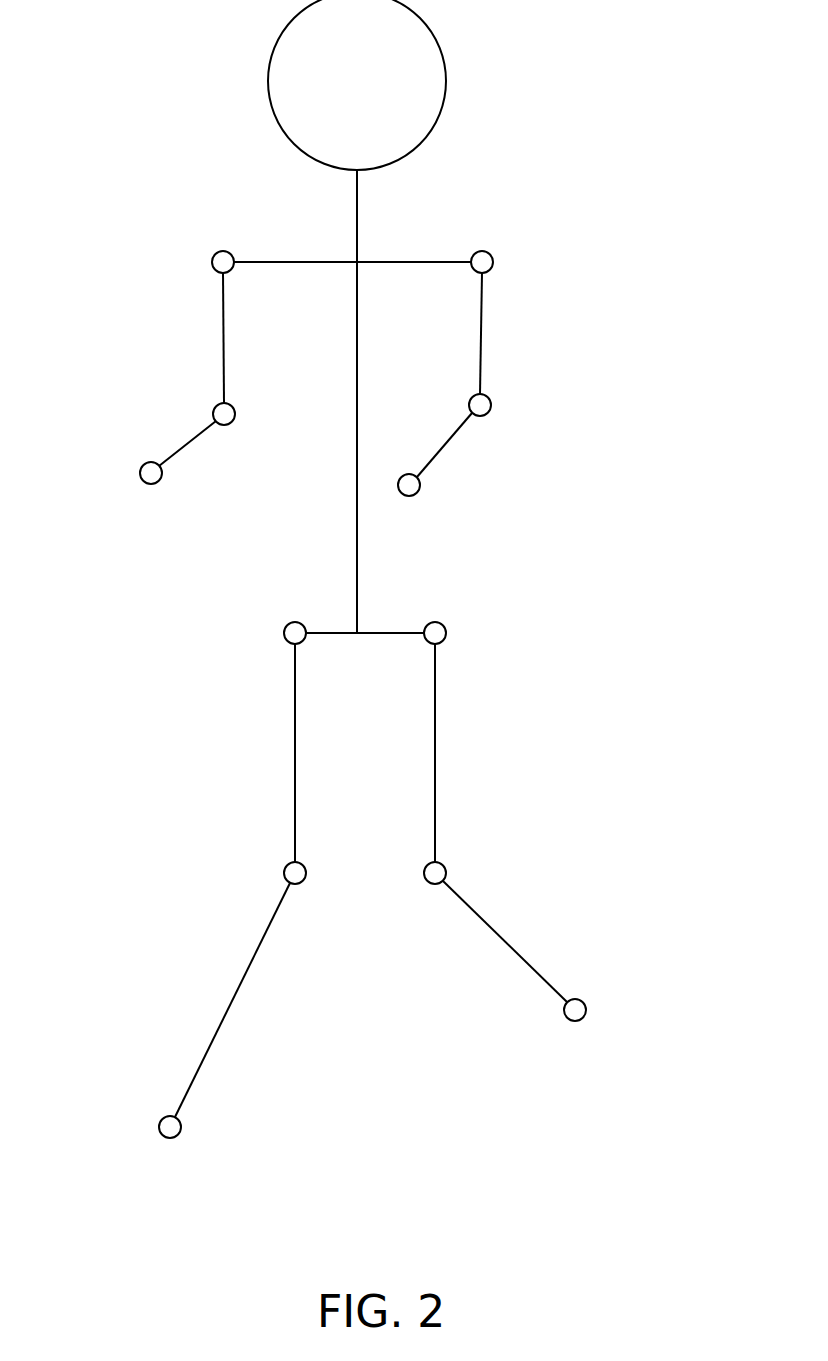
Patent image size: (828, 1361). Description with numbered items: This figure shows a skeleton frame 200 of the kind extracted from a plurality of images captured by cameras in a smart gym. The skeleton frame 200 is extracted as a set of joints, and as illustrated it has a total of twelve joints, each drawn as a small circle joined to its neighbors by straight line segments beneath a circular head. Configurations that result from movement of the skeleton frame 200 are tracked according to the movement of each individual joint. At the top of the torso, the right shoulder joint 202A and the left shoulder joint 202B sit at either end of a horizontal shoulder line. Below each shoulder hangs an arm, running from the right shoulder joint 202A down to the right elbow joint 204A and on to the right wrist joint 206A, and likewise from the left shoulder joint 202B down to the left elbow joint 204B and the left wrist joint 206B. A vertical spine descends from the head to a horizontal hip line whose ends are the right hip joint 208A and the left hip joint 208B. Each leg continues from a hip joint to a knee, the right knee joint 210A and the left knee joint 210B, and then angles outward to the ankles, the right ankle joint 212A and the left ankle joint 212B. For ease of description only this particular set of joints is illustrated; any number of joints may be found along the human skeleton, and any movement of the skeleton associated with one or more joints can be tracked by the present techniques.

The skeleton frame 200 is at (400, 1278).
The right shoulder joint 202A is at (214, 253).
The left shoulder joint 202B is at (488, 251).
The right elbow joint 204A is at (215, 405).
The left elbow joint 204B is at (490, 399).
The right wrist joint 206A is at (153, 486).
The left wrist joint 206B is at (414, 497).
The right hip joint 208A is at (288, 623).
The left hip joint 208B is at (440, 622).
The right knee joint 210A is at (287, 863).
The left knee joint 210B is at (443, 863).
The right ankle joint 212A is at (164, 1140).
The left ankle joint 212B is at (580, 1023).